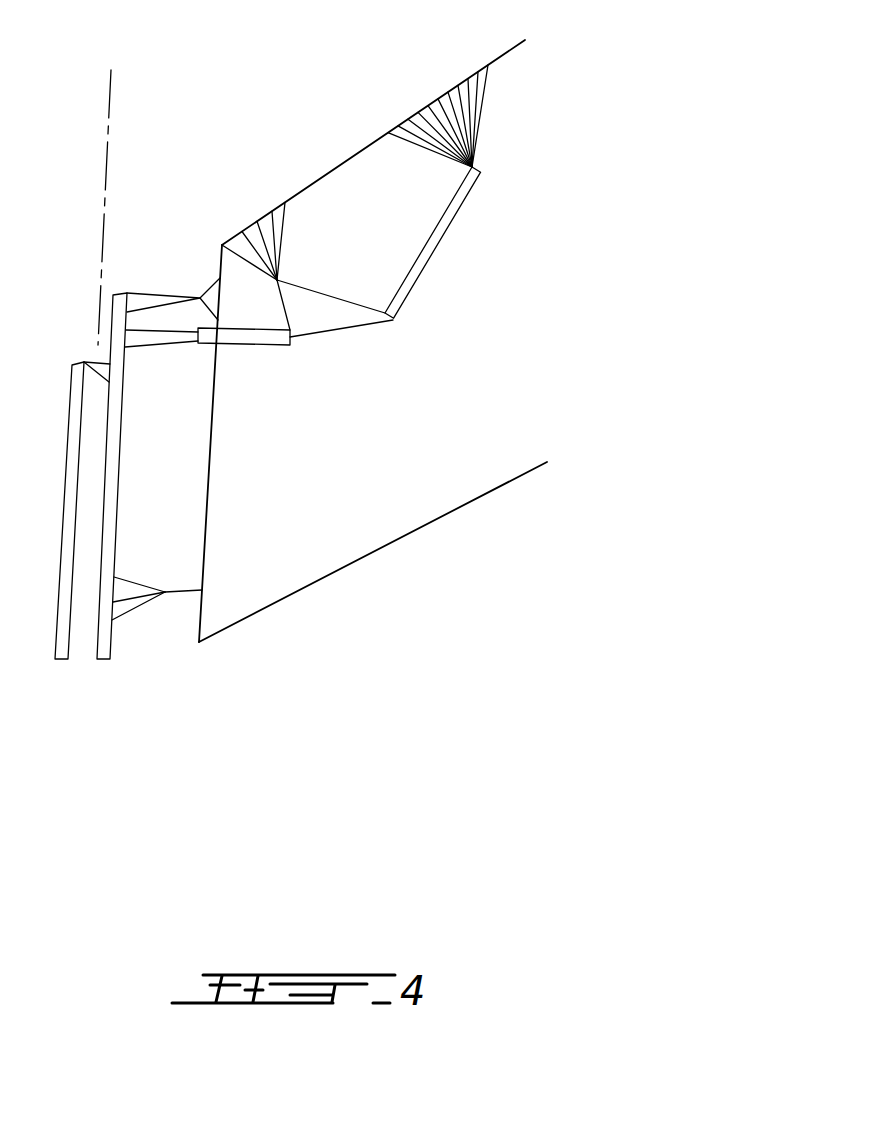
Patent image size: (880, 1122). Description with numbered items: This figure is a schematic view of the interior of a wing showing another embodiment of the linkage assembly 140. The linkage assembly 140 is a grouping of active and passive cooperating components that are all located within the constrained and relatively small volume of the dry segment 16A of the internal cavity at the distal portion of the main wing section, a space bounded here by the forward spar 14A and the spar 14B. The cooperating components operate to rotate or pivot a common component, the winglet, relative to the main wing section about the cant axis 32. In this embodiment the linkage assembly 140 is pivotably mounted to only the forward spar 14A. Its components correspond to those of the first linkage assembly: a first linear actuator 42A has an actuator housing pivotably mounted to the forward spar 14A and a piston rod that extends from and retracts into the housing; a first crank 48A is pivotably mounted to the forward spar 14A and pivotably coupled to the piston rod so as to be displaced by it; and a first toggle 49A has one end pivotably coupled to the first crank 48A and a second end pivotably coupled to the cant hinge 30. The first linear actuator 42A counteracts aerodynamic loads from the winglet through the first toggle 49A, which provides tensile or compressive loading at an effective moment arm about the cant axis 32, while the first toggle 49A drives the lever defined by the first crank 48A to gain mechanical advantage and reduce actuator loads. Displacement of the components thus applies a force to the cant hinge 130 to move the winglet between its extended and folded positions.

The forward spar 14A is at (323, 179).
The second panel surface 14B is at (362, 560).
The dry segment 16A is at (313, 453).
The first linear actuator 42A is at (474, 251).
The first crank 48A is at (327, 271).
The first toggle 49A is at (234, 303).
The linkage assembly 140 is at (378, 368).
The cant hinge 130 is at (143, 396).
The cant hinge 30 is at (77, 702).
The cant axis 32 is at (105, 172).